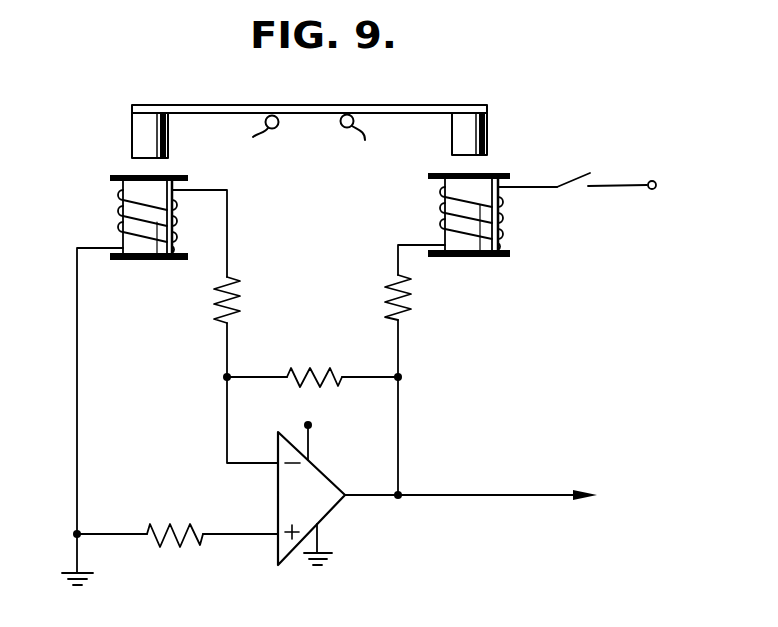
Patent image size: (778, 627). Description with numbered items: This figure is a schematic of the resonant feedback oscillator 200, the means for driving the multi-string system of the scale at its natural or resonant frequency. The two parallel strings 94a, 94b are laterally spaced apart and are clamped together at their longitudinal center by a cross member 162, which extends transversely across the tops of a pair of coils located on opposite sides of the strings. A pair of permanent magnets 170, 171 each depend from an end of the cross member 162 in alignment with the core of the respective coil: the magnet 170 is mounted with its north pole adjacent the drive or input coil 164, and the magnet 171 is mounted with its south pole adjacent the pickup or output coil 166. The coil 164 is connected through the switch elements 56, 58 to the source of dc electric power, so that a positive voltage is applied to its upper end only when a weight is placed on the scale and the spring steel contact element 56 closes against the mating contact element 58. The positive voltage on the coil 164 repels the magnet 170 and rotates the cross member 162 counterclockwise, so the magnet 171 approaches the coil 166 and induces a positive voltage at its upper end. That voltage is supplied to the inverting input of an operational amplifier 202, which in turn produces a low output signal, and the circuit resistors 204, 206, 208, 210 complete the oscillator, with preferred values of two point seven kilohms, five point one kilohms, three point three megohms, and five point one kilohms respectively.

The cross member 162 is at (380, 104).
The permanent magnet 171 is at (132, 135).
The permanent magnet 170 is at (488, 123).
The string 94b is at (257, 141).
The string 94a is at (366, 141).
The pickup or output coil 166 is at (120, 204).
The drive or input coil 164 is at (499, 216).
The spring steel contact element 56 is at (578, 171).
The mating contact element 58 is at (603, 185).
The resonant feedback oscillator 200 is at (488, 333).
The circuit resistor 206 is at (236, 298).
The circuit resistor 204 is at (408, 295).
The circuit resistor 208 is at (313, 368).
The circuit resistor 210 is at (180, 543).
The operational amplifier 202 is at (323, 472).